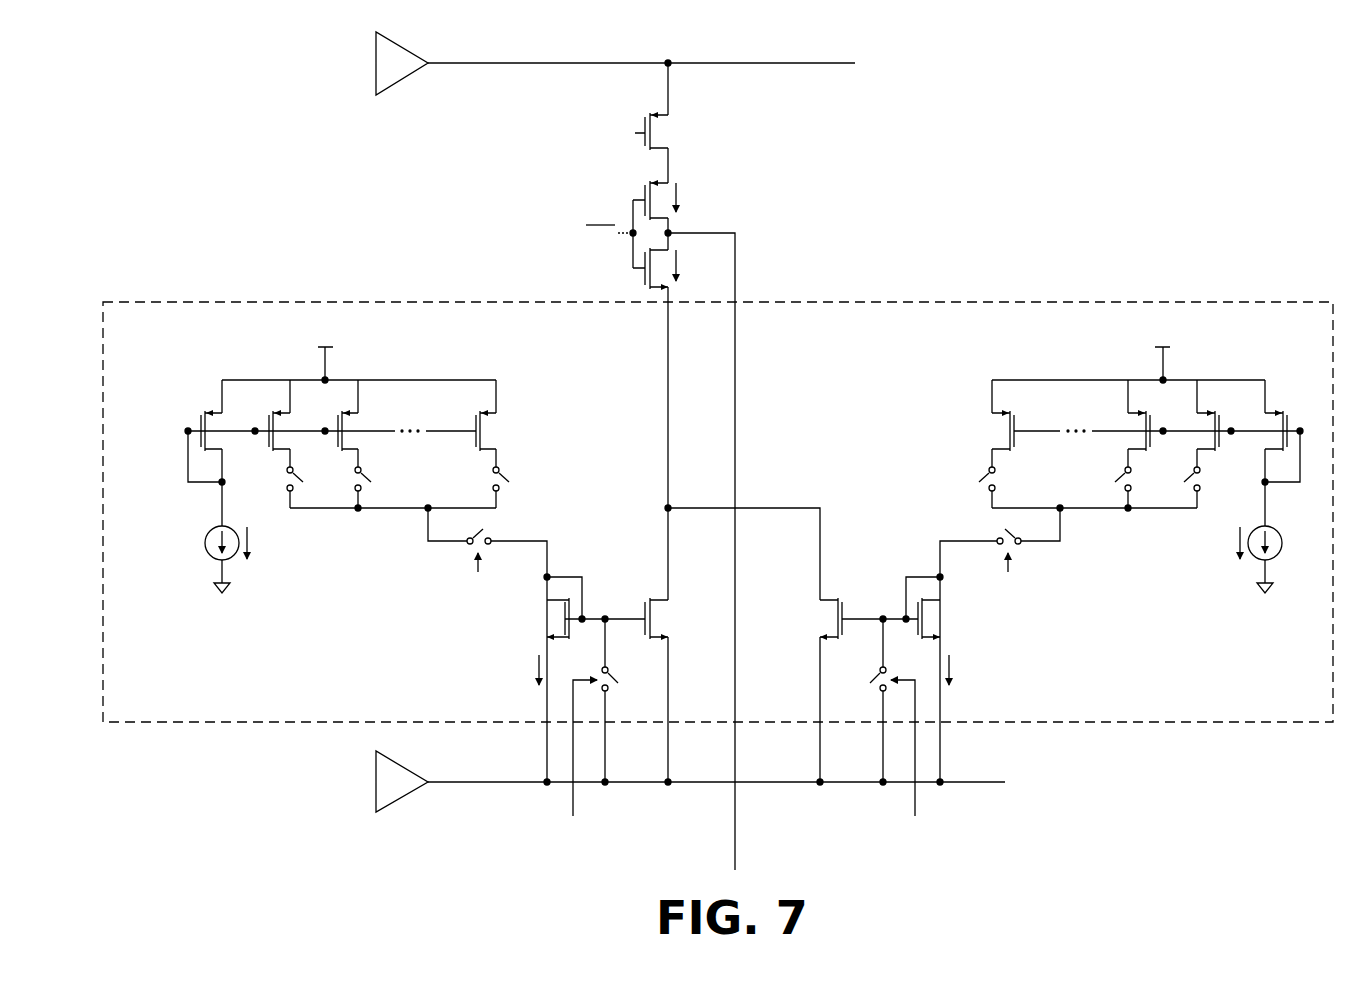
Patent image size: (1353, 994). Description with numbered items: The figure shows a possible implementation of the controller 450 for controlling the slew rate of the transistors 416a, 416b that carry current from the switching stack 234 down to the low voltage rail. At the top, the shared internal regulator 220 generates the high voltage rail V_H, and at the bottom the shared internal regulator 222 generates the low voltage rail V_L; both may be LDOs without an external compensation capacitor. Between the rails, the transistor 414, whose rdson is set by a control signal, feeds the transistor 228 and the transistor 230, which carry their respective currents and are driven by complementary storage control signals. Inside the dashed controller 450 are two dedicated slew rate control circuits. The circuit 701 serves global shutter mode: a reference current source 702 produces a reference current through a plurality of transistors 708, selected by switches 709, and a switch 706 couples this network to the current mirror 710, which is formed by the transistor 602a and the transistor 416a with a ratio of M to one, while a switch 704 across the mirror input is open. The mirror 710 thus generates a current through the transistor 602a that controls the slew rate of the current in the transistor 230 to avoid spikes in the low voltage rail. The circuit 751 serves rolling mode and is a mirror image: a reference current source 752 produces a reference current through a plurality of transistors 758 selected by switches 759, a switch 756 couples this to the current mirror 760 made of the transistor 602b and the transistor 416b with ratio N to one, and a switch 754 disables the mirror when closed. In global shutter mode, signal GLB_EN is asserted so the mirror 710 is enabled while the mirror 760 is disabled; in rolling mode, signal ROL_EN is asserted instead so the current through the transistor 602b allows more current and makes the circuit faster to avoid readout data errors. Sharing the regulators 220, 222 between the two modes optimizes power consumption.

The internal regulator 220 is at (382, 42).
The internal regulator 222 is at (398, 800).
The current steering circuit 234 is at (596, 466).
The transistor 414 is at (670, 148).
The current I_228 transistor 228 is at (645, 187).
The current I_230 transistor 230 is at (645, 286).
The controller 450 is at (983, 302).
The slew rate control circuit 701 is at (448, 584).
The reference current source 702 is at (206, 534).
The switch 704 is at (612, 668).
The switch 706 is at (473, 536).
The plurality of transistors 708 is at (525, 427).
The switches 709 is at (525, 465).
The current mirror 710 is at (619, 614).
The transistor 602a is at (563, 622).
The transistor 416a is at (682, 618).
The slew rate control circuit 751 is at (1045, 584).
The reference current source 752 is at (1282, 535).
The switch 754 is at (878, 668).
The switch 756 is at (1013, 536).
The plurality of transistors 758 is at (962, 425).
The switches 759 is at (962, 463).
The current mirror 760 is at (877, 614).
The transistor 602b is at (942, 622).
The transistor 416b is at (836, 622).